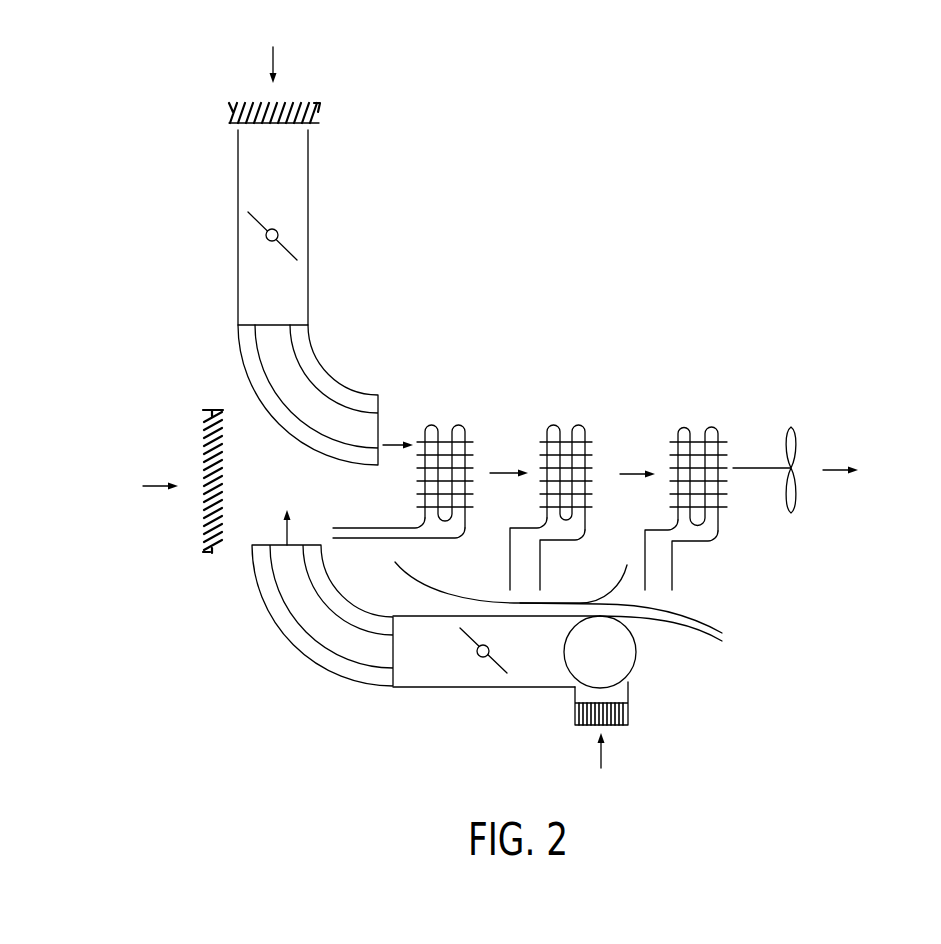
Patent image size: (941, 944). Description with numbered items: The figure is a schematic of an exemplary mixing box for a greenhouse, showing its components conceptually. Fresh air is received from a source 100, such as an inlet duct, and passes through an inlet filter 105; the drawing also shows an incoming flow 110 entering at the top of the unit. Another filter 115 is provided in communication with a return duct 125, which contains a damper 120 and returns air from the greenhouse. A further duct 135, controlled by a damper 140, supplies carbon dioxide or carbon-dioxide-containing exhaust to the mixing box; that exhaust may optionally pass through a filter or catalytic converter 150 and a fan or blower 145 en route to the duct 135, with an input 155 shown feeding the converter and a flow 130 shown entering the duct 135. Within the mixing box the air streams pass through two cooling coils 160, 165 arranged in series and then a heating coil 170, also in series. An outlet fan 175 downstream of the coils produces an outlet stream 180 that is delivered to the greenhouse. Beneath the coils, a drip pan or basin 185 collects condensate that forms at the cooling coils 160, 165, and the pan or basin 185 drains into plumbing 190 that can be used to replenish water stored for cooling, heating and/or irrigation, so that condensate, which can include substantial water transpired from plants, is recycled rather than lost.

The source 100 is at (135, 487).
The inlet filter 105 is at (213, 552).
The outside air inlet 110 is at (277, 47).
The filter 115 is at (318, 110).
The damper 120 is at (288, 212).
The return duct 125 is at (333, 378).
The return air inlet 130 is at (288, 510).
The duct 135 is at (293, 647).
The damper 140 is at (452, 663).
The fan or blower 145 is at (622, 653).
The filter or catalytic converter 150 is at (575, 713).
The heater power input 155 is at (603, 769).
The cooling coil 160 is at (465, 425).
The cooling coil 165 is at (575, 427).
The heating coil 170 is at (707, 428).
The outlet fan 175 is at (796, 427).
The outlet stream 180 is at (868, 471).
The drip pan or basin 185 is at (511, 582).
The plumbing 190 is at (646, 635).